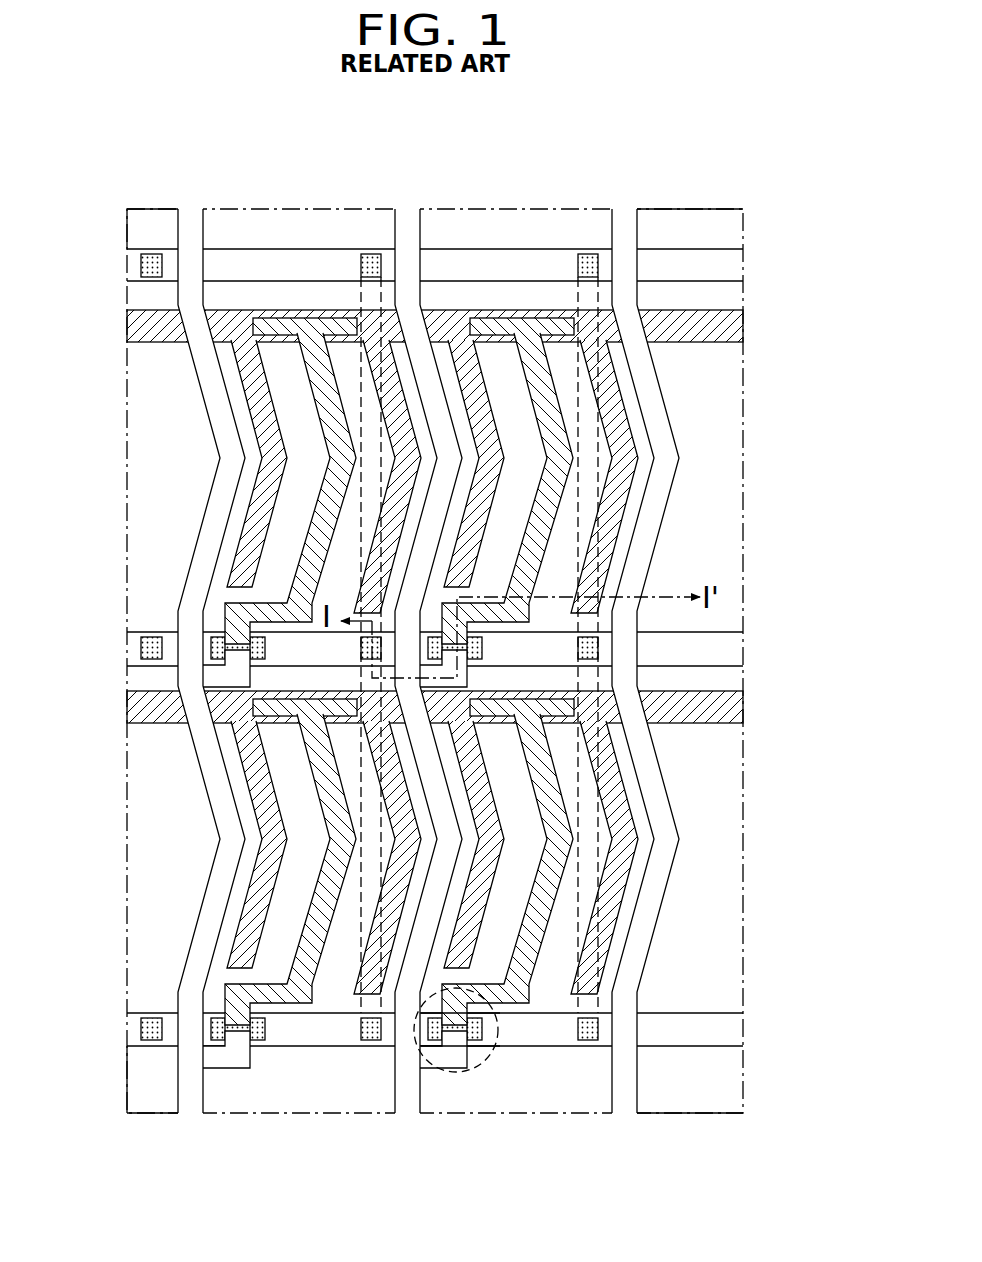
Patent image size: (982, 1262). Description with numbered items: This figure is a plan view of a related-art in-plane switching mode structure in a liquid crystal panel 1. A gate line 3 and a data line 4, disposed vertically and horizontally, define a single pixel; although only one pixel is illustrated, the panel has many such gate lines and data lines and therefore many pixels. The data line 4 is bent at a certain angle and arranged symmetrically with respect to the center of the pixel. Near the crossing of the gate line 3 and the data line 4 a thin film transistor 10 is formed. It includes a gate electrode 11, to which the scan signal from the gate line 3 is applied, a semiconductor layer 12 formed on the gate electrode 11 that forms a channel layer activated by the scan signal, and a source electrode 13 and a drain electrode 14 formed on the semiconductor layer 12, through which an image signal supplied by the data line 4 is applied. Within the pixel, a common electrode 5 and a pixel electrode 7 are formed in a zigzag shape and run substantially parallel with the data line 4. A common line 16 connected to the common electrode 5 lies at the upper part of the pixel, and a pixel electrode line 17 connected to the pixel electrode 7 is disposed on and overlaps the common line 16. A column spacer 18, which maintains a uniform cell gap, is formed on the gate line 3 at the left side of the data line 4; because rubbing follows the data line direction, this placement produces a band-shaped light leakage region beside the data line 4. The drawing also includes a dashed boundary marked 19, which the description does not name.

The liquid crystal panel 1 is at (748, 217).
The gate line 3 is at (733, 639).
The data line 4 is at (408, 228).
The common electrode 5 is at (262, 843).
The pixel electrode 7 is at (317, 912).
The thin film transistor 10 is at (511, 1046).
The gate electrode 11 is at (495, 1040).
The semiconductor layer 12 is at (437, 1041).
The source electrode 13 is at (462, 1057).
The drain electrode 14 is at (499, 1012).
The common line 16 is at (128, 726).
The pixel electrode line 17 is at (205, 707).
The column spacer 18 is at (373, 1041).
The light shielding pattern 19 is at (352, 521).